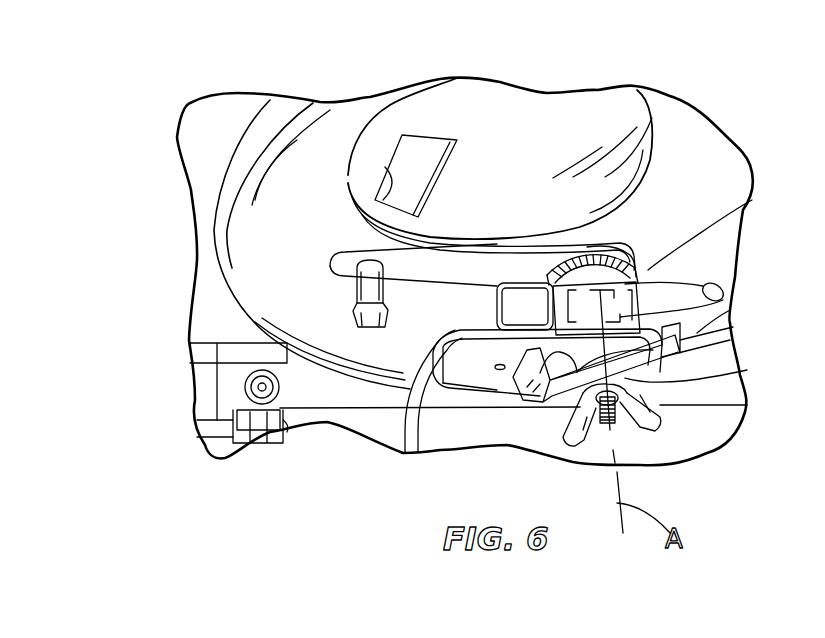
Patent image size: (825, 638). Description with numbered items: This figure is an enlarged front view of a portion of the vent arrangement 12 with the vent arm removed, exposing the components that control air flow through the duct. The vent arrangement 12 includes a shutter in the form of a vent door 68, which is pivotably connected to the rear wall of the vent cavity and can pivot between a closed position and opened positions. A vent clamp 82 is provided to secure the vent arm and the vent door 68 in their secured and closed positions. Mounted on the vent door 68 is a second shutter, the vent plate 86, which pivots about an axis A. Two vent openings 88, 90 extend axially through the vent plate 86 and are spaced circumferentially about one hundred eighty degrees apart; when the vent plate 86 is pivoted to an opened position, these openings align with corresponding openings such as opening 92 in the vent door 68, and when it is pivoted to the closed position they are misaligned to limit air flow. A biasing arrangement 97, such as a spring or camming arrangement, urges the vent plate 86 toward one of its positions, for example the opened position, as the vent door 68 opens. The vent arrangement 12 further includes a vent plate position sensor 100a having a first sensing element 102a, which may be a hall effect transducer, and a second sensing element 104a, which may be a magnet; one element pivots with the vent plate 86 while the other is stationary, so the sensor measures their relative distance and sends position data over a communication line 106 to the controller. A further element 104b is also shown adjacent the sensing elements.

The vent arrangement 12 is at (688, 418).
The vent door 68 is at (215, 313).
The vent clamp 82 is at (720, 392).
The vent plate 86 is at (680, 130).
The vent opening 88 is at (603, 112).
The vent opening 90 is at (718, 283).
The opening in the vent door 92 is at (355, 207).
The biasing arrangement 97 is at (633, 240).
The vent plate position sensor 100a is at (463, 310).
The first sensing element 102a is at (520, 320).
The second sensing element 104a is at (633, 280).
The clamp bar extension 104b is at (690, 340).
The communication line 106 is at (403, 423).